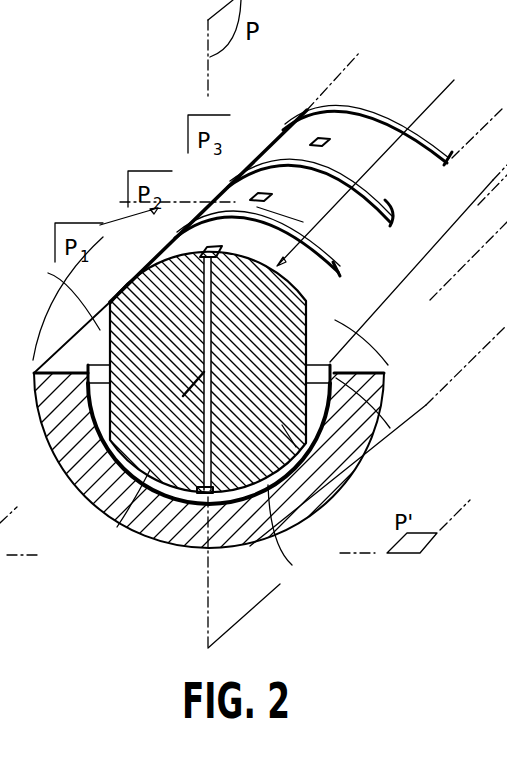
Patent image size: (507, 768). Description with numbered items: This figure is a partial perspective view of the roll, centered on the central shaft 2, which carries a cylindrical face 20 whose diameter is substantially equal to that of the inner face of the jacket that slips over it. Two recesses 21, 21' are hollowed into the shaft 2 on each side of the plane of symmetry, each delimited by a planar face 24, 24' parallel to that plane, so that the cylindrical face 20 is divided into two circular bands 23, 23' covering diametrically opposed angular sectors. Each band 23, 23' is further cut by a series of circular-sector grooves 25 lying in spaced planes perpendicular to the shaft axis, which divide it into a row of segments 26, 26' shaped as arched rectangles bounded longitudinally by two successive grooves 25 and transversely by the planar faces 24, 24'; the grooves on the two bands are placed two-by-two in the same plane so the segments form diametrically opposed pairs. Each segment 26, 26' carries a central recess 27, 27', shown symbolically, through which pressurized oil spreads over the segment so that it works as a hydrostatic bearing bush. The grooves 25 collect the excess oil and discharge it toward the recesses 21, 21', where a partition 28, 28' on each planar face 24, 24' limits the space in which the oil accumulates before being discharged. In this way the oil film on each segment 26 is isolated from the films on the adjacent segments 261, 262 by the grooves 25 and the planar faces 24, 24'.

The central shaft 2 is at (297, 487).
The cylindrical face 20 is at (135, 242).
The recess 21 is at (59, 298).
The recess 21' is at (398, 408).
The circular band 23 is at (385, 210).
The circular band 23' is at (298, 534).
The planar face 24 is at (65, 320).
The planar face 24' is at (382, 351).
The groove 25 is at (207, 245).
The segment 26 is at (257, 187).
The segment 26' is at (108, 512).
The adjacent segment 261 is at (297, 188).
The adjacent segment 262 is at (360, 140).
The recess 27 is at (167, 189).
The recess 27' is at (181, 540).
The partition 28 is at (253, 460).
The partition 28' is at (338, 459).